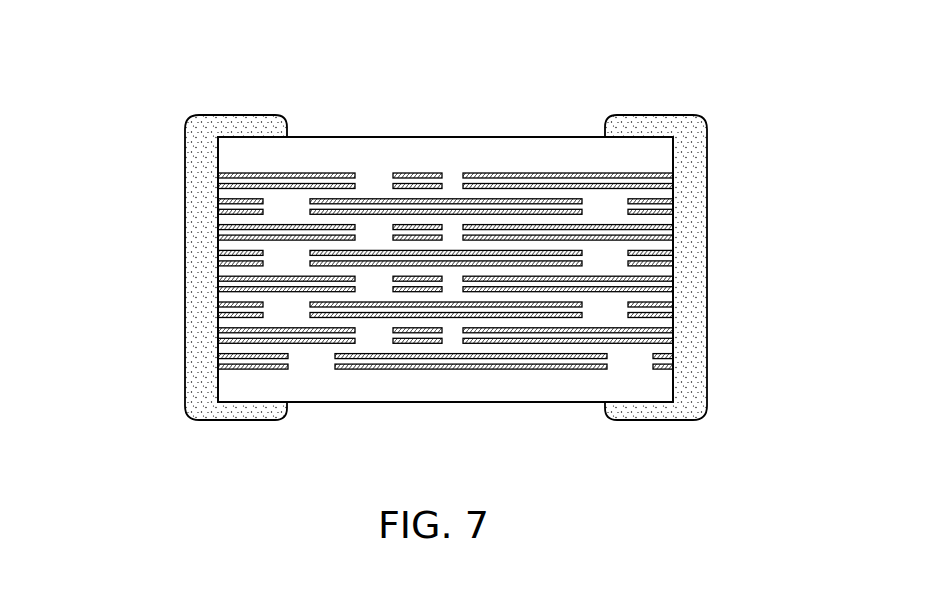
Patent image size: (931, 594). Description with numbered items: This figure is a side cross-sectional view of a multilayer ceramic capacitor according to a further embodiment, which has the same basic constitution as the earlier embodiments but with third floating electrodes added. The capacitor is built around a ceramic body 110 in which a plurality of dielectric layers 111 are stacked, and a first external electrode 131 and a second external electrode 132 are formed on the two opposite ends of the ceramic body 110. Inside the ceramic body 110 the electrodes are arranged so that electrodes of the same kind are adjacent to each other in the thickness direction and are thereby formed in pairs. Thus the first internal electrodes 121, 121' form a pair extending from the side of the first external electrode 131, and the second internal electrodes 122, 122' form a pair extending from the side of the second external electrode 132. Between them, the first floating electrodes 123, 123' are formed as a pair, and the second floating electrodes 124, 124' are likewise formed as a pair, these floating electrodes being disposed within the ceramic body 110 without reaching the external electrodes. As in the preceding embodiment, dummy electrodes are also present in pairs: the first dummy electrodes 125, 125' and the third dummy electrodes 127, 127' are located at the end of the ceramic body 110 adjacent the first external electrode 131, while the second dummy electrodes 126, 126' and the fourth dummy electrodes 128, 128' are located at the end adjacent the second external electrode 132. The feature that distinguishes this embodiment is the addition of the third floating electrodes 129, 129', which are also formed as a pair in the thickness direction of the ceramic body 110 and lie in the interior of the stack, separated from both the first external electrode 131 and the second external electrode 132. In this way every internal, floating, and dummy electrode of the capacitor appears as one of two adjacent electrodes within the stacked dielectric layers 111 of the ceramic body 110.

The ceramic body 110 is at (493, 117).
The dielectric layers 111 is at (663, 297).
The first internal electrode 121 is at (286, 96).
The first internal electrode 121' is at (286, 121).
The second internal electrode 122 is at (568, 121).
The second internal electrode 122' is at (568, 117).
The first floating electrode 123 is at (446, 118).
The first floating electrode 123' is at (446, 139).
The second floating electrode 124 is at (471, 414).
The second floating electrode 124' is at (471, 419).
The first dummy electrode 125 is at (165, 185).
The first dummy electrode 125' is at (162, 210).
The second dummy electrode 126 is at (709, 189).
The second dummy electrode 126' is at (712, 221).
The third dummy electrode 127 is at (187, 346).
The third dummy electrode 127' is at (180, 385).
The fourth dummy electrode 128 is at (723, 346).
The fourth dummy electrode 128' is at (726, 380).
The third floating electrode 129 is at (356, 401).
The third floating electrode 129' is at (396, 406).
The first external electrode 131 is at (192, 252).
The second external electrode 132 is at (698, 257).